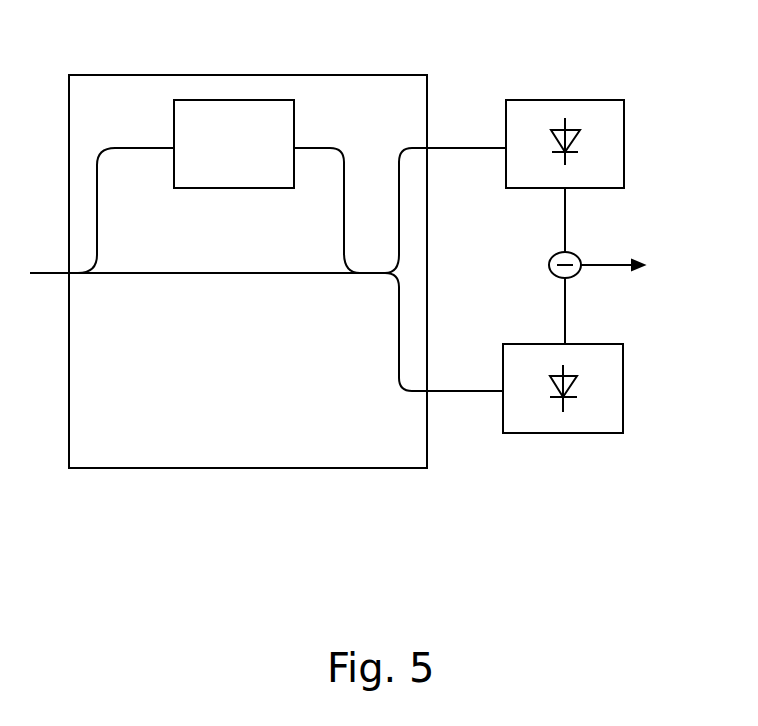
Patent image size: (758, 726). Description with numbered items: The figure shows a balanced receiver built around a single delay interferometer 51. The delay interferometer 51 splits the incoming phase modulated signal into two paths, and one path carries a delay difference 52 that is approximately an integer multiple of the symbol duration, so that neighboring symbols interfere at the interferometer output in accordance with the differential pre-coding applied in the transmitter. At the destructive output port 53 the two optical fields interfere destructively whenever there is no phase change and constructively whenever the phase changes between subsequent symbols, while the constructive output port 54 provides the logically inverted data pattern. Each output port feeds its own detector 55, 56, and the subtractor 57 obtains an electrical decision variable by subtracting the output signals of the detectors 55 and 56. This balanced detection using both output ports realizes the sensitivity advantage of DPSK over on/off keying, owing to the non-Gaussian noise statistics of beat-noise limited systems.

The delay interferometer 51 is at (234, 468).
The delay difference 52 is at (240, 100).
The destructive output port 53 is at (453, 146).
The constructive output port 54 is at (455, 393).
The detector 55 is at (624, 140).
The detector 56 is at (623, 402).
The subtractor 57 is at (578, 276).